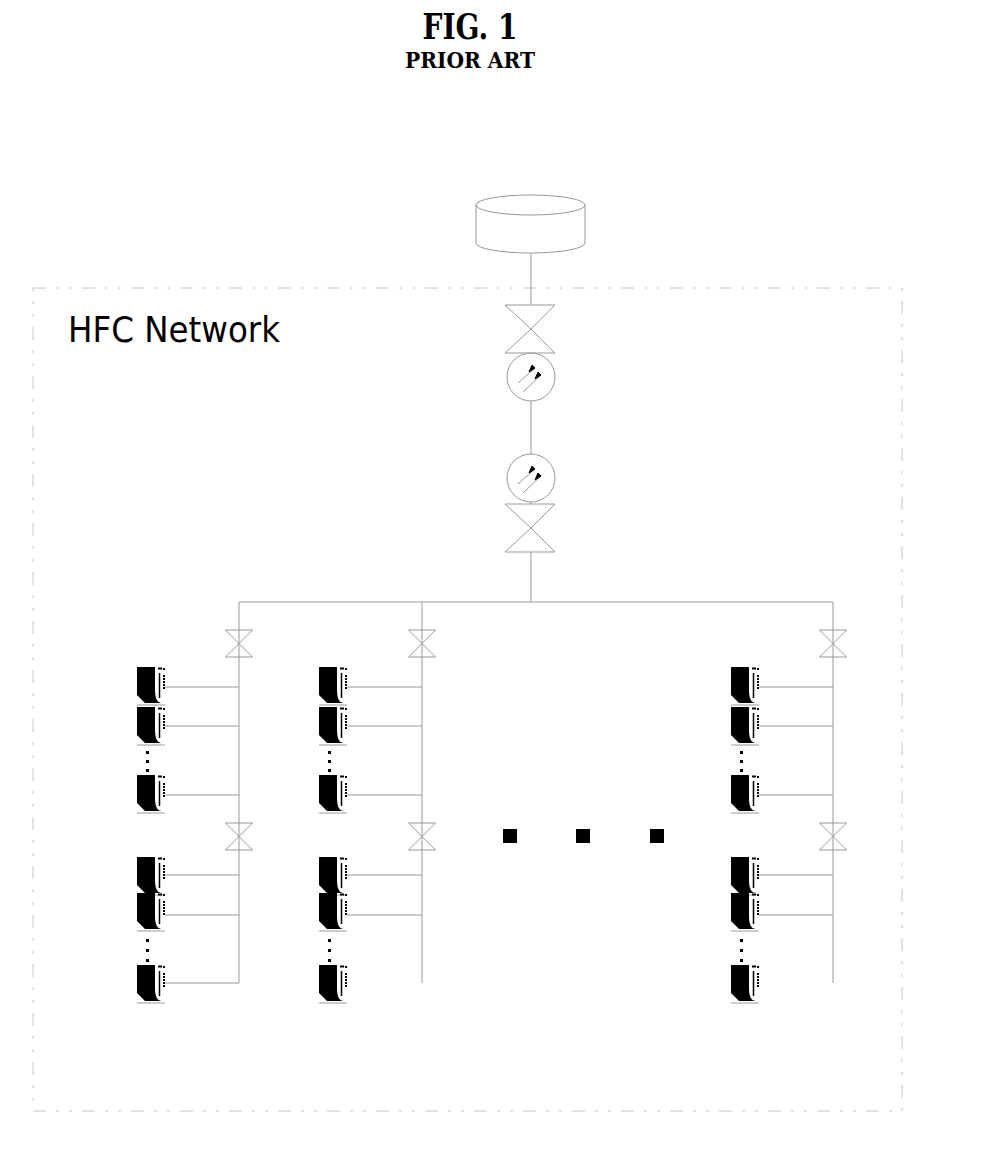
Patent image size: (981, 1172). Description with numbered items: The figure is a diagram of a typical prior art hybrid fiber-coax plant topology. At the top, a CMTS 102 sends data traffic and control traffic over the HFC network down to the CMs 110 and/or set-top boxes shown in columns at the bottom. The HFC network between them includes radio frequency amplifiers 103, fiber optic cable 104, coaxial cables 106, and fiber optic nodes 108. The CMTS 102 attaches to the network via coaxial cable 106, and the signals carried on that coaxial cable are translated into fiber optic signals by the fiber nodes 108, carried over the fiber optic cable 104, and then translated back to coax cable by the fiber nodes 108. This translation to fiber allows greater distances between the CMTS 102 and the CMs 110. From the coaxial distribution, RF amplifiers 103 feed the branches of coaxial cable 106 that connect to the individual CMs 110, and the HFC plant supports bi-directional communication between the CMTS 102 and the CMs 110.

The CMTS 102 is at (587, 228).
The radio frequency amplifier 103 is at (228, 640).
The fiber optic cable 104 is at (533, 432).
The coaxial cable 106 is at (440, 592).
The fiber optic node 108 is at (551, 335).
The CM 110 is at (279, 1035).